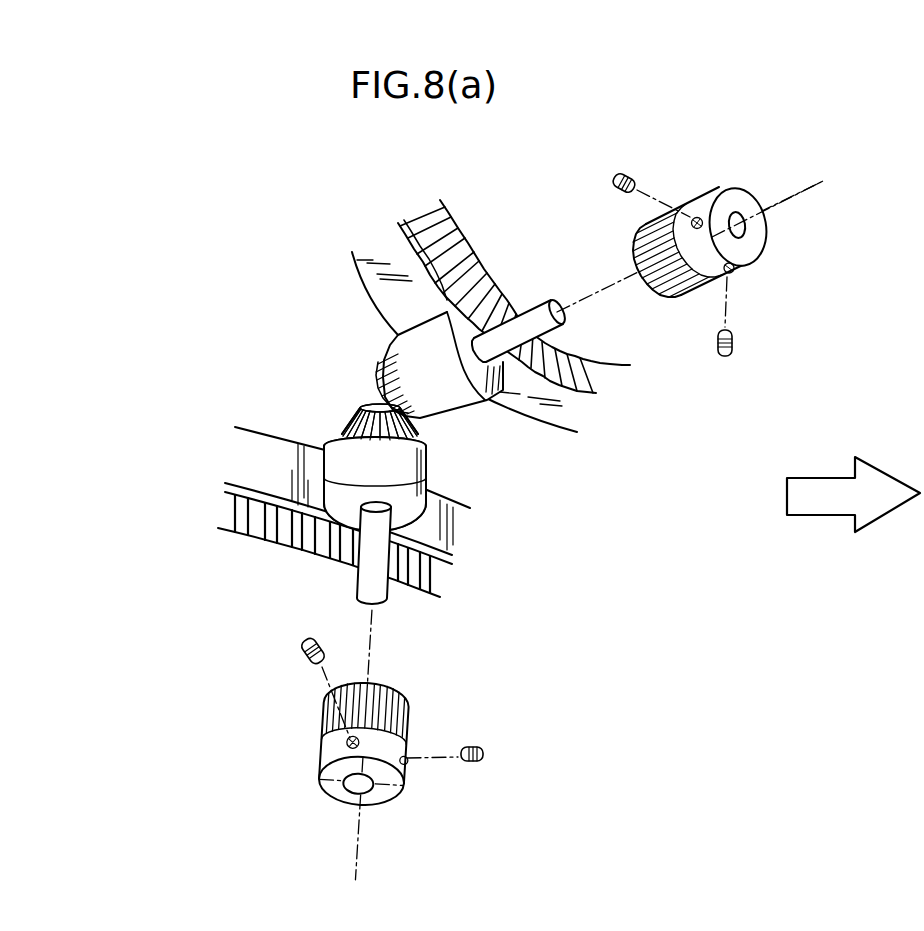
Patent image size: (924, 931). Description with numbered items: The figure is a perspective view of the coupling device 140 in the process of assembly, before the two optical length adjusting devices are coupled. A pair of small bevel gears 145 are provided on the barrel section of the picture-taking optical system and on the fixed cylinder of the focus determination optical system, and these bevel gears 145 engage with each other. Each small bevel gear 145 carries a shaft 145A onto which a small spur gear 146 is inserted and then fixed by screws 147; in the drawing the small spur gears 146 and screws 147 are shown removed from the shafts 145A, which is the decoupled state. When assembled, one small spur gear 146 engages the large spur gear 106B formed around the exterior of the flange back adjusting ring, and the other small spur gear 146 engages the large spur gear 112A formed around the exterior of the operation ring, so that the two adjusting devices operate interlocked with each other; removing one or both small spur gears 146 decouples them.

The coupling device 140 is at (237, 160).
The large spur gear 106B is at (445, 215).
The large spur gear 112A is at (253, 540).
The small bevel gear 145 is at (357, 410).
The shaft 145A is at (530, 310).
The small spur gear 146 is at (662, 293).
The screw 147 is at (632, 182).